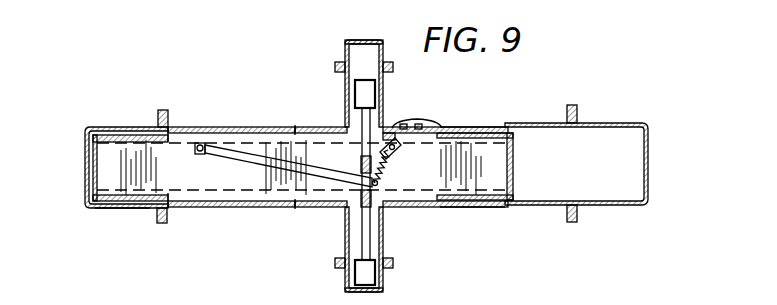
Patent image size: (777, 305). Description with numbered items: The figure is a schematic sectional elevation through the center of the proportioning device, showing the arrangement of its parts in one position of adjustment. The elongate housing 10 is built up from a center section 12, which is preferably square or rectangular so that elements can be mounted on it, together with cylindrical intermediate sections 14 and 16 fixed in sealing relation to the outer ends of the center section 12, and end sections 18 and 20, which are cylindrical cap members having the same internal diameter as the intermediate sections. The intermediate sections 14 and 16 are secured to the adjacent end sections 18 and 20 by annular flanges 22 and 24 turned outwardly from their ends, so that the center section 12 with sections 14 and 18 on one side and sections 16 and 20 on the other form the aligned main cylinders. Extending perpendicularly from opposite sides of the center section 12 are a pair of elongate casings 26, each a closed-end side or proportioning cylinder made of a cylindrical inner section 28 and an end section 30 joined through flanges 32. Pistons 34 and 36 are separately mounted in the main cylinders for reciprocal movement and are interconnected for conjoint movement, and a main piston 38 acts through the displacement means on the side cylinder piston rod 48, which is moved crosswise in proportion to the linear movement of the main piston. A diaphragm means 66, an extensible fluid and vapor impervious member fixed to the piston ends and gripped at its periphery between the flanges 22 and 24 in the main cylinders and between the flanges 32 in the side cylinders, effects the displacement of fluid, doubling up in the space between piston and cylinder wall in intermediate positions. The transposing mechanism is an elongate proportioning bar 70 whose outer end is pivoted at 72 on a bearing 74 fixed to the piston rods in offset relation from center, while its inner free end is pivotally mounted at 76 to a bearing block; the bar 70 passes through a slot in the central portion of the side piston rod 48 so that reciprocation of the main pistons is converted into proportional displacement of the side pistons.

The elongate housing 10 is at (454, 114).
The center section 12 is at (325, 208).
The intermediate section 14 is at (250, 208).
The intermediate section 16 is at (492, 208).
The end section 18 is at (114, 210).
The end section 20 is at (617, 206).
The annular flange 22 is at (160, 112).
The annular flange 24 is at (170, 128).
The elongate casing 26 is at (387, 96).
The inner section 28 is at (355, 94).
The end section 30 is at (360, 40).
The flange 32 is at (389, 62).
The piston 34 is at (88, 142).
The piston 36 is at (514, 168).
The main piston 38 is at (271, 196).
The piston rod 48 is at (362, 148).
The diaphragm means 66 is at (92, 188).
The proportioning bar 70 is at (262, 166).
The pivot 72 is at (205, 145).
The bearing 74 is at (199, 153).
The pivot 76 is at (380, 186).